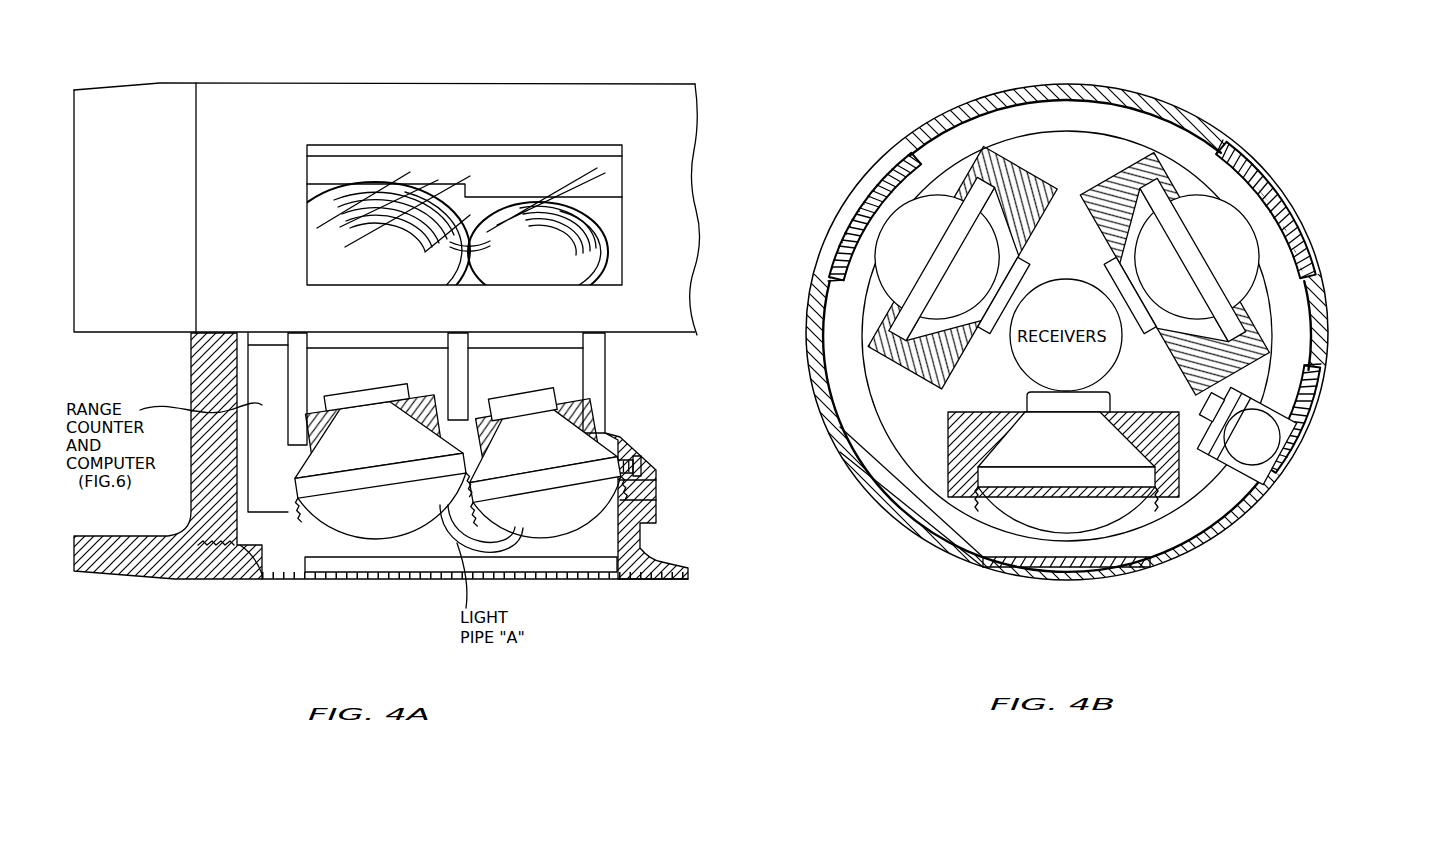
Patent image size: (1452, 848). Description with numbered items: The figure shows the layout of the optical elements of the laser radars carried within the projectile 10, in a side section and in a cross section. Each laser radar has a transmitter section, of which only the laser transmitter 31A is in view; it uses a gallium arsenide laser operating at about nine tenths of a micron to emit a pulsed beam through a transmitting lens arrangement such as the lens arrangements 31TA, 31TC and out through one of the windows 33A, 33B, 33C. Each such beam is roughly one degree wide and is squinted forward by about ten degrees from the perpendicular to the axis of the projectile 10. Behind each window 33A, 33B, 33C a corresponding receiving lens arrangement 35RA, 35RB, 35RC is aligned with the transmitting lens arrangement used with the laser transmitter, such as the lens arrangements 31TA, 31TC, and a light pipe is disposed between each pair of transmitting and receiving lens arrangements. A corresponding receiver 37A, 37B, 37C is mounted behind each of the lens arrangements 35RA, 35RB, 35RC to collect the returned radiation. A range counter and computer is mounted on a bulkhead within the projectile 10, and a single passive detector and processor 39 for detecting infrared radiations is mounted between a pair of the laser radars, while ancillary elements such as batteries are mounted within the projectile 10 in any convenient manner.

In FIG. 4A, the projectile 10 is at (550, 85).
In FIG. 4B, the projectile 10 is at (1110, 88).
In FIG. 4A, the window 33C is at (523, 173).
In FIG. 4B, the window 33C is at (850, 222).
In FIG. 4A, the lens arrangement 35RC is at (432, 273).
In FIG. 4B, the lens arrangement 35RC is at (923, 208).
In FIG. 4A, the lens arrangement 31TC is at (520, 272).
In FIG. 4A, the receiver 37A is at (341, 393).
In FIG. 4B, the receiver 37A is at (1077, 395).
In FIG. 4A, the laser transmitter 31A is at (555, 407).
In FIG. 4A, the lens arrangement 31TA is at (600, 520).
In FIG. 4A, the lens arrangement 35RA is at (335, 520).
In FIG. 4B, the lens arrangement 35RA is at (1110, 507).
In FIG. 4A, the window 33A is at (543, 583).
In FIG. 4B, the window 33A is at (1027, 568).
In FIG. 4B, the lens arrangement 35RB is at (1192, 212).
In FIG. 4B, the window 33B is at (1280, 223).
In FIG. 4B, the receiver 37C is at (1010, 295).
In FIG. 4B, the receiver 37B is at (1125, 298).
In FIG. 4B, the passive detector and processor 39 is at (1240, 432).